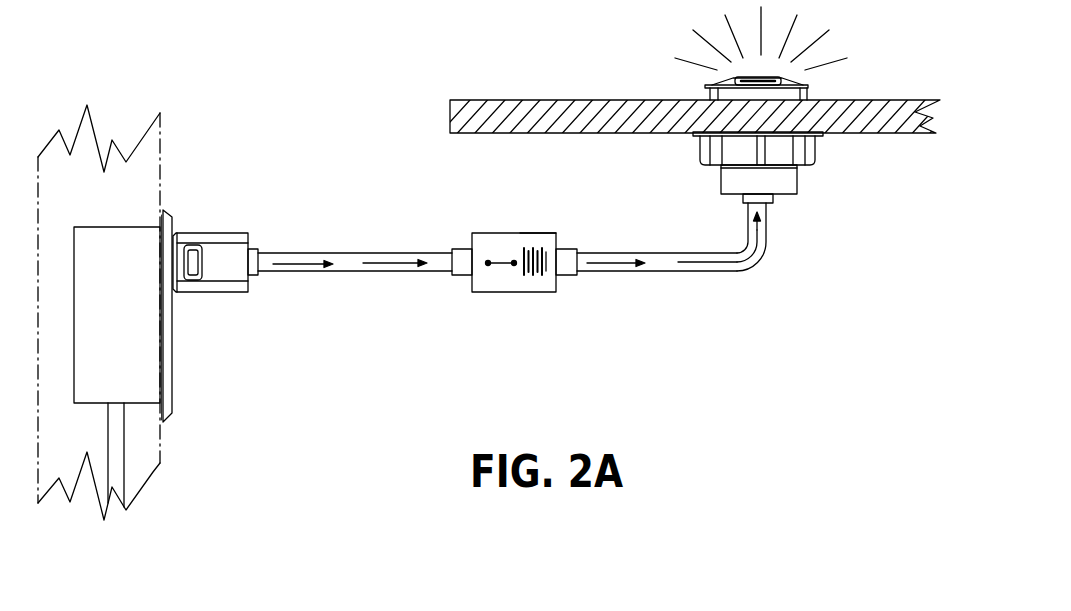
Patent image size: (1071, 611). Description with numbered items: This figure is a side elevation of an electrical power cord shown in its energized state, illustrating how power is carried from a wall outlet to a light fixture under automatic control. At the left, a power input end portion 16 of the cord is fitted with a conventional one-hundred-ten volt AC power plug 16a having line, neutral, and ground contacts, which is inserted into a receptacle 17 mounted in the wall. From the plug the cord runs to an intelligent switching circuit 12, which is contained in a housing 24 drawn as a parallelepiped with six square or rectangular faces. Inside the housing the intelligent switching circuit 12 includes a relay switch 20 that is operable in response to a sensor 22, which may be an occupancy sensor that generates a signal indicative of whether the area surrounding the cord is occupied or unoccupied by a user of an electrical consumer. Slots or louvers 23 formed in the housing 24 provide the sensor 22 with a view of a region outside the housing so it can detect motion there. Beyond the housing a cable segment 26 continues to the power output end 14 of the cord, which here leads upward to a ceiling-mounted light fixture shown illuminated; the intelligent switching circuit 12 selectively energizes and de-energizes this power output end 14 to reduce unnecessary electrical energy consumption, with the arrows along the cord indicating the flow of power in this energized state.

The intelligent switching circuit 12 is at (506, 231).
The power output end 14 is at (788, 214).
The power input end portion 16 is at (271, 310).
The 110V AC power plug 16a is at (228, 233).
The receptacle 17 is at (173, 323).
The relay switch 20 is at (493, 281).
The sensor 22 is at (541, 286).
The slots or louvers 23 is at (543, 253).
The housing 24 is at (537, 233).
The cable segment to fixture 26 is at (685, 271).